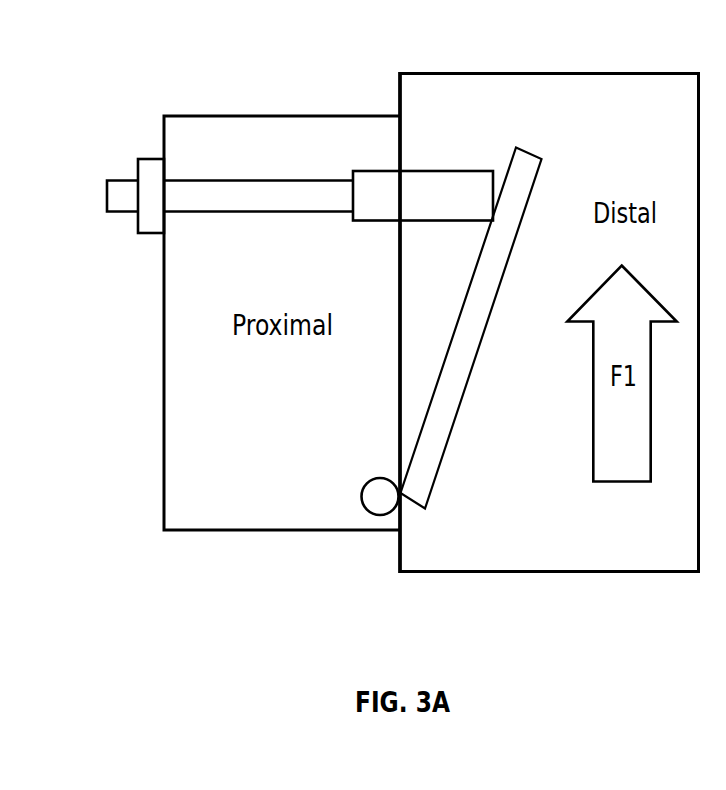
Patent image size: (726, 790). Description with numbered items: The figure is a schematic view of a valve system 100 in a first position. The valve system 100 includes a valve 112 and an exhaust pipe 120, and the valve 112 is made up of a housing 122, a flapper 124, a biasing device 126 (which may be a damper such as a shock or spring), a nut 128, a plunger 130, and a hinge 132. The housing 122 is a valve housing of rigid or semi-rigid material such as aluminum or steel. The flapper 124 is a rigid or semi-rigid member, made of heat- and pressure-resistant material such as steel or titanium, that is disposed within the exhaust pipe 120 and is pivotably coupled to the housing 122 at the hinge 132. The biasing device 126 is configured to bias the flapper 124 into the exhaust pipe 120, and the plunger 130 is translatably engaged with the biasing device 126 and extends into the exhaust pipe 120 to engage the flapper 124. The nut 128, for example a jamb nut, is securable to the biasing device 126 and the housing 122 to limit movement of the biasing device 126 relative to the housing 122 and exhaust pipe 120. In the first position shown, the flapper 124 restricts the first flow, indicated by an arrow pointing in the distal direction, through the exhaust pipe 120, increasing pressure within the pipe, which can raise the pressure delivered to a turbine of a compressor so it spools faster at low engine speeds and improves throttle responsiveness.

The valve system 100 is at (514, 578).
The valve 112 is at (380, 90).
The exhaust pipe 120 is at (652, 142).
The housing 122 is at (232, 114).
The flapper 124 is at (530, 156).
The biasing device 126 is at (256, 196).
The nut 128 is at (150, 158).
The plunger 130 is at (445, 186).
The hinge 132 is at (370, 482).